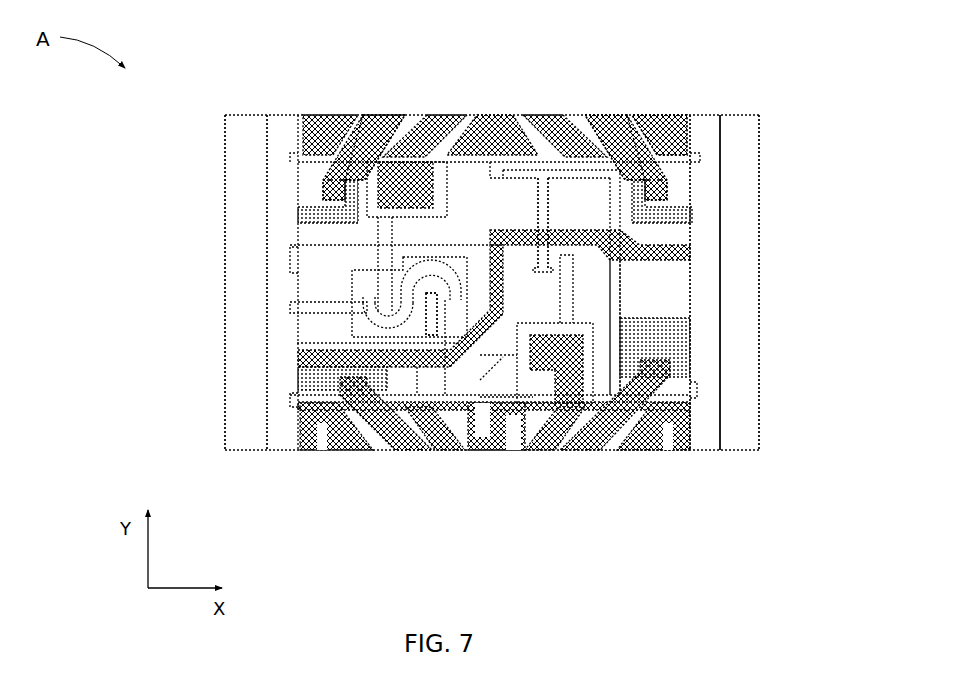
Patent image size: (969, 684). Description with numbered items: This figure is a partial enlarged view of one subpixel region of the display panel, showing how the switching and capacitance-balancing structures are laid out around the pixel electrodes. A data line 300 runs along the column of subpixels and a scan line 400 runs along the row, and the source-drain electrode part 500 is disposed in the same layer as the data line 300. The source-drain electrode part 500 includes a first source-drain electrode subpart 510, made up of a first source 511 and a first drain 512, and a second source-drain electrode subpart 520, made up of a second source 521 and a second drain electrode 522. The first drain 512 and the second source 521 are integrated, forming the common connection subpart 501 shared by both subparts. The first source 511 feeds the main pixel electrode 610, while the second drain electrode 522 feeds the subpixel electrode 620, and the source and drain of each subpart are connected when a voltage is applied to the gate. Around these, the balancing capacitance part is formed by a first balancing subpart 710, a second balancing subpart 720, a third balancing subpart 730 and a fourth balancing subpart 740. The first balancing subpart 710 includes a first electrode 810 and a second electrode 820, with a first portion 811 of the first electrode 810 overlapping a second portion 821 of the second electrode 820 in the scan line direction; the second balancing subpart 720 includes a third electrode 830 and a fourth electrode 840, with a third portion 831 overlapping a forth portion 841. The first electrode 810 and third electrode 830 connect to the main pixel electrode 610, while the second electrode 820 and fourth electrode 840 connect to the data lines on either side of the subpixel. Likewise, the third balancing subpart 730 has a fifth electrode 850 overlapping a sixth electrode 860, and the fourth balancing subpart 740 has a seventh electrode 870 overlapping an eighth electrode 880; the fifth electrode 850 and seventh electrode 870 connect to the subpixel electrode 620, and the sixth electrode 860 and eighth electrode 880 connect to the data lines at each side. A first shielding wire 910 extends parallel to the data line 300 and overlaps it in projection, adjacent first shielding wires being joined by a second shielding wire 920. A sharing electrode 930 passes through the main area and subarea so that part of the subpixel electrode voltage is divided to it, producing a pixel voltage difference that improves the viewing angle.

The data line 300 is at (280, 138).
The scan line 400 is at (684, 298).
The source-drain electrode part 500 is at (316, 332).
The common connection subpart 501 is at (347, 295).
The first source-drain electrode subpart 510 is at (285, 307).
The first source 511 is at (377, 297).
The first drain 512 is at (303, 312).
The second source-drain electrode subpart 520 is at (346, 349).
The second source 521 is at (407, 297).
The second drain electrode 522 is at (433, 335).
The main pixel electrode 610 is at (373, 133).
The subpixel electrode 620 is at (348, 433).
The first balancing subpart 710 is at (271, 190).
The second balancing subpart 720 is at (732, 175).
The third balancing subpart 730 is at (271, 415).
The fourth balancing subpart 740 is at (718, 384).
The first electrode 810 is at (378, 192).
The first portion 811 is at (323, 188).
The second electrode 820 is at (335, 212).
The second portion 821 is at (345, 187).
The third electrode 830 is at (690, 198).
The third portion 831 is at (650, 190).
The fourth electrode 840 is at (690, 216).
The forth portion 841 is at (668, 187).
The fifth electrode 850 is at (340, 382).
The sixth electrode 860 is at (323, 373).
The seventh electrode 870 is at (690, 380).
The eighth electrode 880 is at (690, 352).
The first shielding wire 910 is at (712, 148).
The second shielding wire 920 is at (690, 253).
The sharing electrode 930 is at (563, 170).